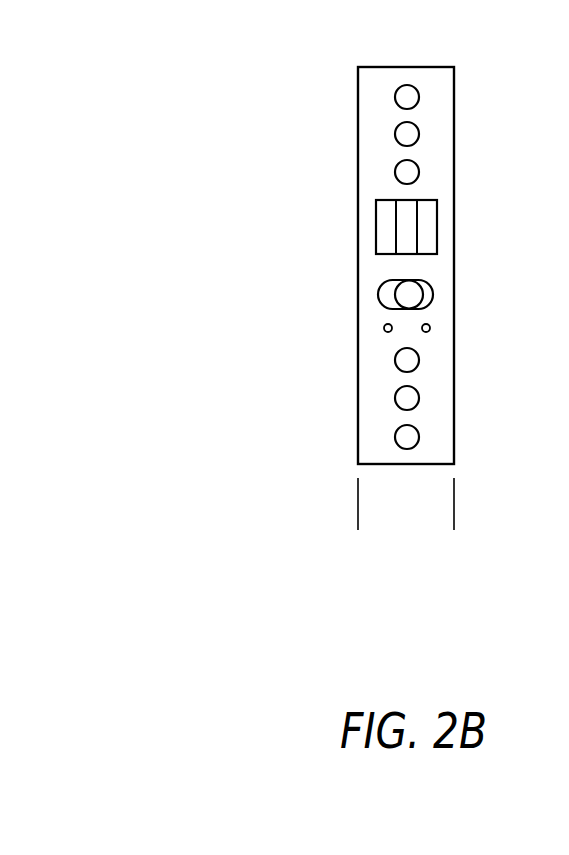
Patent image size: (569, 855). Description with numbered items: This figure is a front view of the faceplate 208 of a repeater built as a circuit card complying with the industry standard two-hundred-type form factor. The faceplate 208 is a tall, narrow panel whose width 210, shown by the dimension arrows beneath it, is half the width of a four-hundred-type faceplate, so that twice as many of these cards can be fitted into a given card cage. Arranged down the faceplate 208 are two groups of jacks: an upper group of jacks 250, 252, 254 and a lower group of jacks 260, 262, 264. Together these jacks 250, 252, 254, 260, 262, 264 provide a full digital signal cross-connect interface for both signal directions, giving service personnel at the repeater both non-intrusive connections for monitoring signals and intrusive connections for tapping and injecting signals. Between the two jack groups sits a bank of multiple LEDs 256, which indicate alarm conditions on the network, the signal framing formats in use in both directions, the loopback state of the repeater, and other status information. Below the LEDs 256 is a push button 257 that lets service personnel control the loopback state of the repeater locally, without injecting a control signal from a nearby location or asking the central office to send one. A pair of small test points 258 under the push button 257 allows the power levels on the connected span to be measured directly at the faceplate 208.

The faceplate 208 is at (375, 92).
The width 210 is at (454, 508).
The jack 250 is at (408, 97).
The jack 252 is at (408, 134).
The jack 254 is at (408, 172).
The LEDs 256 is at (410, 230).
The push button 257 is at (408, 294).
The test points 258 is at (403, 327).
The jack 260 is at (408, 360).
The jack 262 is at (408, 398).
The jack 264 is at (408, 437).